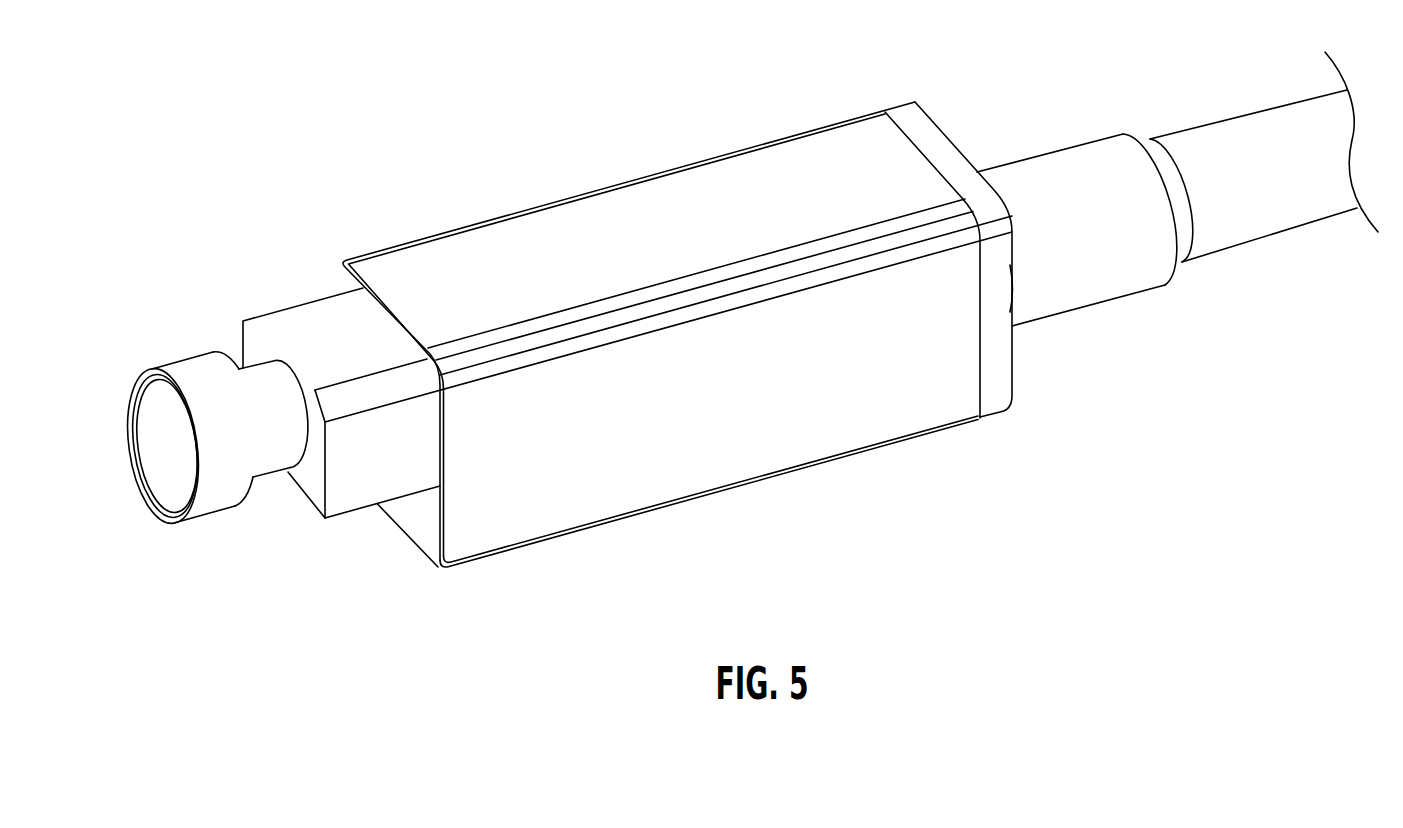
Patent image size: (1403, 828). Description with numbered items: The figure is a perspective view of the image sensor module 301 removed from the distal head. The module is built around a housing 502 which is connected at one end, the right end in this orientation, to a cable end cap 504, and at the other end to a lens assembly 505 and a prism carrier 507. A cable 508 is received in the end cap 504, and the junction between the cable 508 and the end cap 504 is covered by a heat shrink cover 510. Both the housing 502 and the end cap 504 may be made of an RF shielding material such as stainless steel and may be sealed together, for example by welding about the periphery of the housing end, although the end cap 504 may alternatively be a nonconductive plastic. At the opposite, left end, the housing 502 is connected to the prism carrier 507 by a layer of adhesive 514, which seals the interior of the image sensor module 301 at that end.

The image sensor module 301 is at (565, 309).
The housing 502 is at (600, 207).
The cable end cap 504 is at (913, 120).
The lens assembly 505 is at (189, 349).
The prism carrier 507 is at (315, 310).
The cable 508 is at (1307, 108).
The heat shrink cover 510 is at (1224, 128).
The layer of adhesive 514 is at (417, 525).